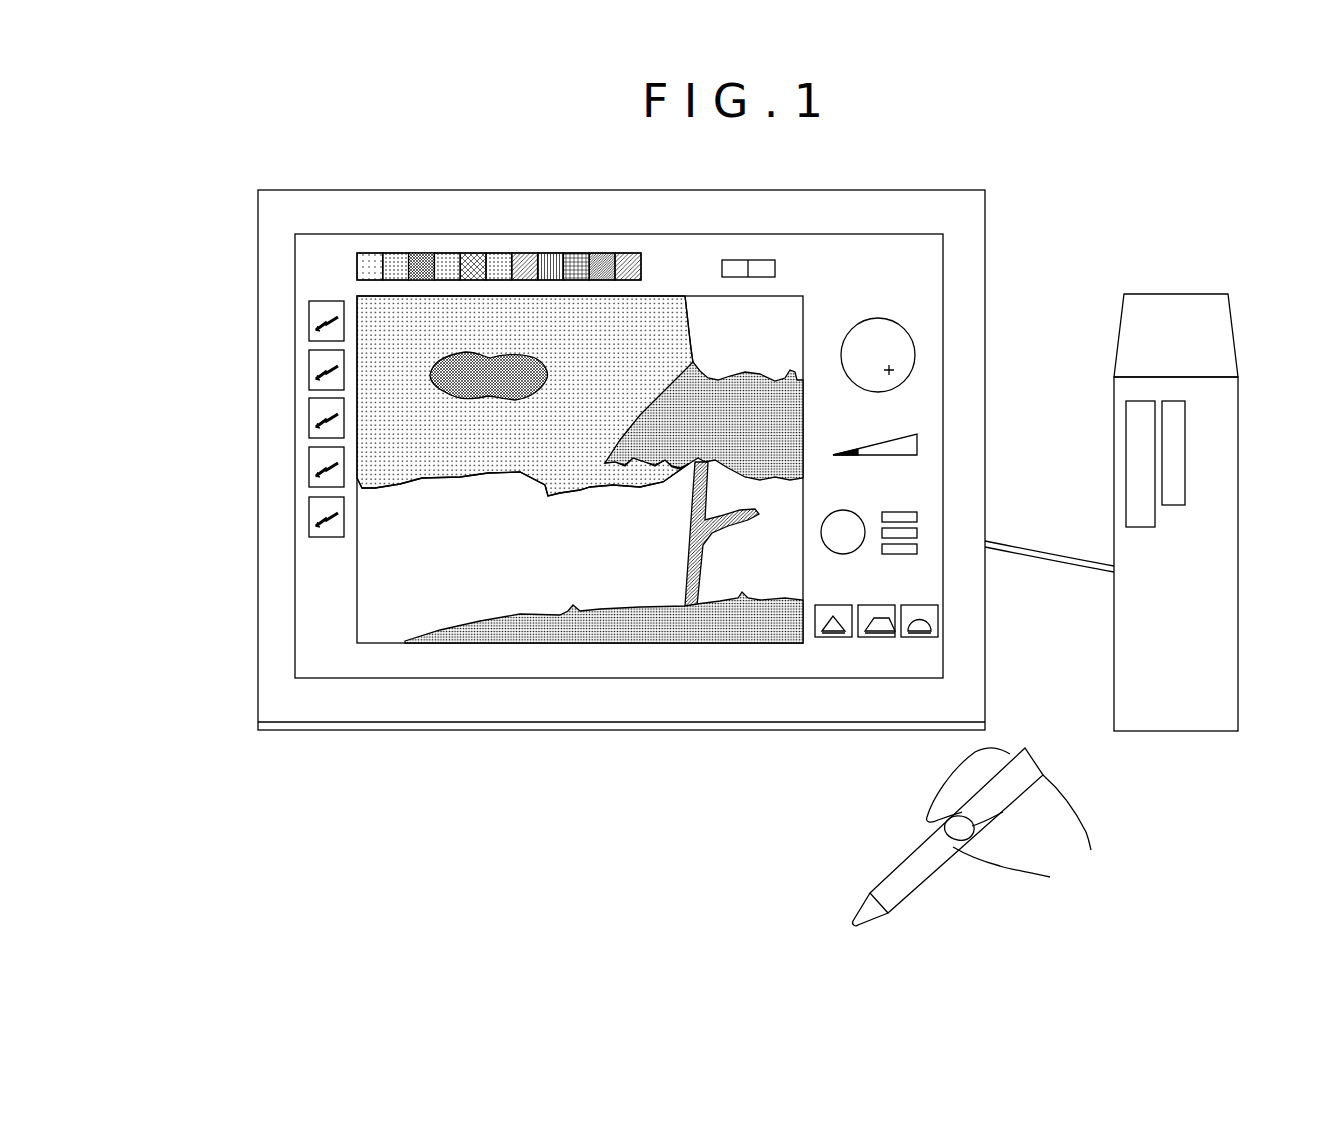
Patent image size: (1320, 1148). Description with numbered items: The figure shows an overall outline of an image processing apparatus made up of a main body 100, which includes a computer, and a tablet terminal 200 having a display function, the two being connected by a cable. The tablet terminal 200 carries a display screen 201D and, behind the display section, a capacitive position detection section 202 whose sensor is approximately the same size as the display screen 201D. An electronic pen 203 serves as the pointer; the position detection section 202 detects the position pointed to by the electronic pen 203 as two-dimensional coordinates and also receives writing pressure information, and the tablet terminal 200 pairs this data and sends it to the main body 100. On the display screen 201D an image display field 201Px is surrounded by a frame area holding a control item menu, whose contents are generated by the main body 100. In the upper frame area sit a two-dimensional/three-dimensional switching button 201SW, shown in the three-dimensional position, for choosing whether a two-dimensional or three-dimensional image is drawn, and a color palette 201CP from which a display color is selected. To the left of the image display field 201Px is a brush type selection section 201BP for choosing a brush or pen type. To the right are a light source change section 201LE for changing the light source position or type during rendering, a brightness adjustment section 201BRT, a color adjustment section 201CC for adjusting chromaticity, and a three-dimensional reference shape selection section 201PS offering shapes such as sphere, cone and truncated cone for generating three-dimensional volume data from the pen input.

The main body of the image processing apparatus 100 is at (1175, 310).
The tablet terminal 200 is at (990, 220).
The position detection section 202 is at (325, 597).
The electronic pen 203 is at (905, 862).
The display screen 201D is at (568, 234).
The color palette 201CP is at (427, 250).
The 2D/3D switching button 201SW is at (735, 253).
The light source change section 201LE is at (915, 330).
The brightness adjustment section 201BRT is at (920, 446).
The color adjustment section 201CC is at (920, 526).
The 3D reference shape selection section 201PS is at (877, 637).
The image display field 201Px is at (612, 578).
The brush type selection section 201BP is at (308, 418).